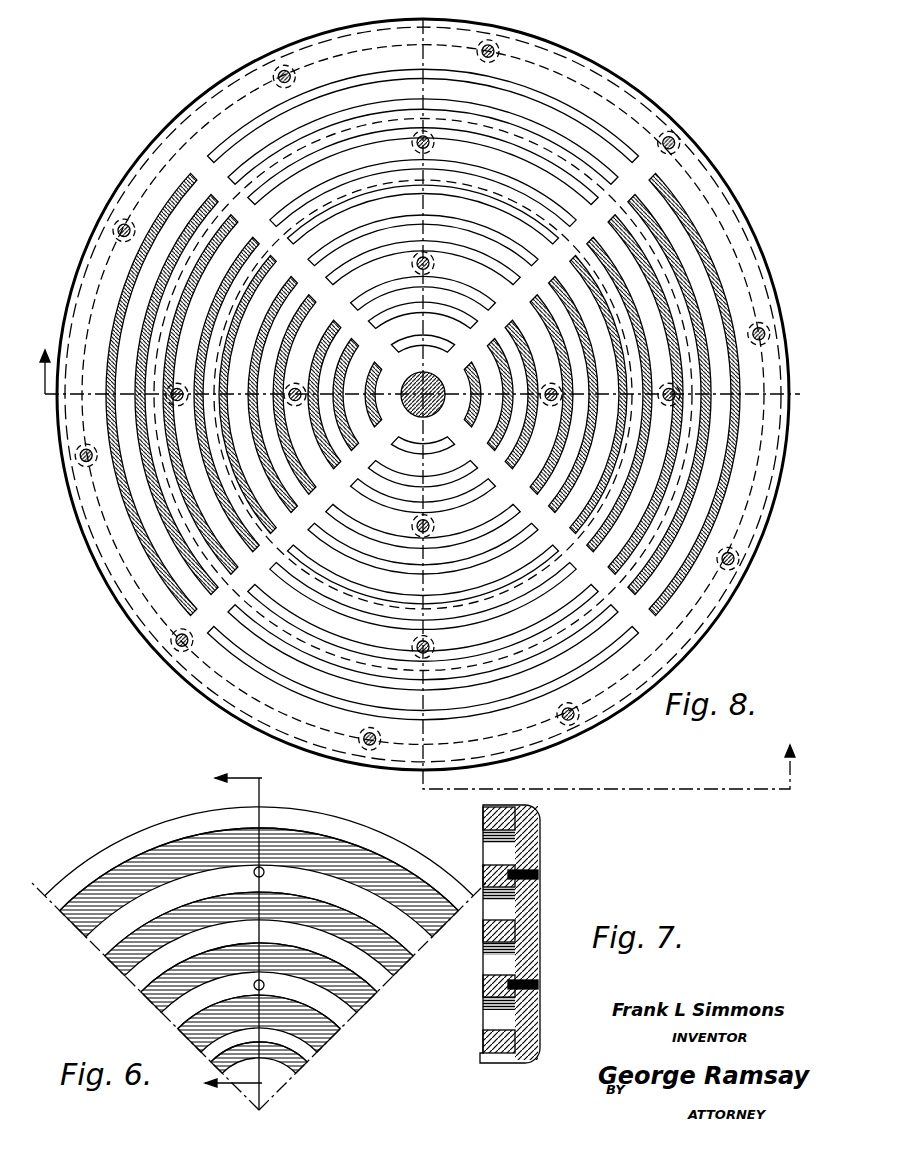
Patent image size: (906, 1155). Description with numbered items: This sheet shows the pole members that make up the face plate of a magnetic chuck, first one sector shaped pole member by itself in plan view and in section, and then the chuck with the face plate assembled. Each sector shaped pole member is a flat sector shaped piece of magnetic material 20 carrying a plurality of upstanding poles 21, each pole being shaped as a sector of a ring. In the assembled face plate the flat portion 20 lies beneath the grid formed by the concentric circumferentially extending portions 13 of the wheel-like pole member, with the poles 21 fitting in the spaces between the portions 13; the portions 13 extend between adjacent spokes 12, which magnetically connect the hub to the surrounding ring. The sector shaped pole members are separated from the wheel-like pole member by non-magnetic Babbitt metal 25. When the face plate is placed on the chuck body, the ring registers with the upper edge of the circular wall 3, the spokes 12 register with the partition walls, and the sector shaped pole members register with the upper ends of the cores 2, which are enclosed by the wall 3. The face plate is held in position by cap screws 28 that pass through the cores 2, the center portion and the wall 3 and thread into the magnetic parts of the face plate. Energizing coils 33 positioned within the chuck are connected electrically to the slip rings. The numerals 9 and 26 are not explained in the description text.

In FIG. 8, the cores 2 is at (542, 112).
In FIG. 8, the circular wall 3 is at (102, 575).
In FIG. 8, the hub opening 9 is at (423, 394).
In FIG. 8, the spokes 12 is at (232, 205).
In FIG. 8, the circumferentially extending portions 13 is at (466, 165).
In FIG. 6, the flat sector shaped piece of magnetic material 20 is at (145, 860).
In FIG. 7, the flat sector shaped piece of magnetic material 20 is at (542, 906).
In FIG. 8, the upstanding poles 21 is at (350, 110).
In FIG. 6, the upstanding poles 21 is at (365, 893).
In FIG. 7, the upstanding poles 21 is at (483, 940).
In FIG. 8, the Babbitt metal 25 is at (252, 140).
In FIG. 8, the central hub 26 is at (436, 405).
In FIG. 8, the cap screws 28 is at (588, 752).
In FIG. 8, the energizing coils 33 is at (602, 162).